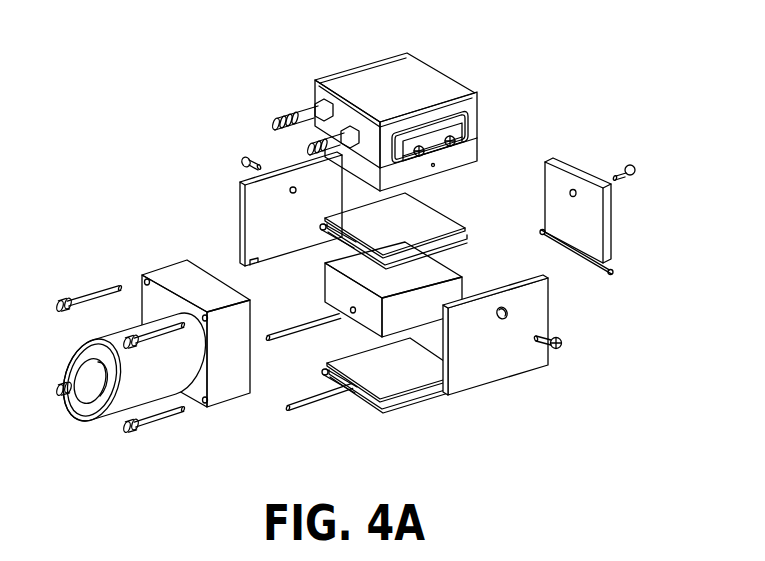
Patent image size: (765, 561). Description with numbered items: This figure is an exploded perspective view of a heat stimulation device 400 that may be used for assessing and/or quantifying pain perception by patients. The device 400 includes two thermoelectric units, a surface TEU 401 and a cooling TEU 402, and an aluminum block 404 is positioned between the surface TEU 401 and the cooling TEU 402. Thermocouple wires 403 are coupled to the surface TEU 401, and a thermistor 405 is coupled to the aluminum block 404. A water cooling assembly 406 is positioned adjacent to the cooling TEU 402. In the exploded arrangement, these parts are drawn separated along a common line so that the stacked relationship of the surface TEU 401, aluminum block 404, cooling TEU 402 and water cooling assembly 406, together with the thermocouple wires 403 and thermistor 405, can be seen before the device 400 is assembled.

The heat stimulation device 400 is at (187, 118).
The surface TEU 401 is at (400, 380).
The cooling TEU 402 is at (448, 218).
The thermocouple wires 403 is at (323, 400).
The aluminum block 404 is at (453, 287).
The thermistor 405 is at (290, 334).
The water cooling assembly 406 is at (393, 80).